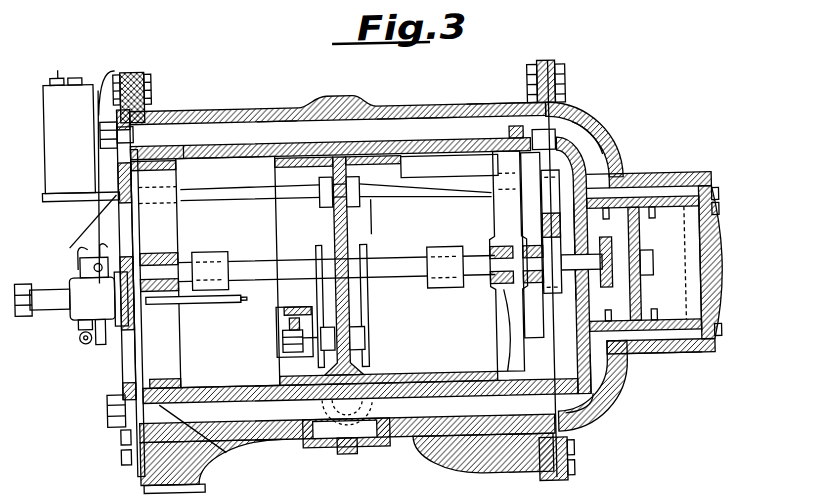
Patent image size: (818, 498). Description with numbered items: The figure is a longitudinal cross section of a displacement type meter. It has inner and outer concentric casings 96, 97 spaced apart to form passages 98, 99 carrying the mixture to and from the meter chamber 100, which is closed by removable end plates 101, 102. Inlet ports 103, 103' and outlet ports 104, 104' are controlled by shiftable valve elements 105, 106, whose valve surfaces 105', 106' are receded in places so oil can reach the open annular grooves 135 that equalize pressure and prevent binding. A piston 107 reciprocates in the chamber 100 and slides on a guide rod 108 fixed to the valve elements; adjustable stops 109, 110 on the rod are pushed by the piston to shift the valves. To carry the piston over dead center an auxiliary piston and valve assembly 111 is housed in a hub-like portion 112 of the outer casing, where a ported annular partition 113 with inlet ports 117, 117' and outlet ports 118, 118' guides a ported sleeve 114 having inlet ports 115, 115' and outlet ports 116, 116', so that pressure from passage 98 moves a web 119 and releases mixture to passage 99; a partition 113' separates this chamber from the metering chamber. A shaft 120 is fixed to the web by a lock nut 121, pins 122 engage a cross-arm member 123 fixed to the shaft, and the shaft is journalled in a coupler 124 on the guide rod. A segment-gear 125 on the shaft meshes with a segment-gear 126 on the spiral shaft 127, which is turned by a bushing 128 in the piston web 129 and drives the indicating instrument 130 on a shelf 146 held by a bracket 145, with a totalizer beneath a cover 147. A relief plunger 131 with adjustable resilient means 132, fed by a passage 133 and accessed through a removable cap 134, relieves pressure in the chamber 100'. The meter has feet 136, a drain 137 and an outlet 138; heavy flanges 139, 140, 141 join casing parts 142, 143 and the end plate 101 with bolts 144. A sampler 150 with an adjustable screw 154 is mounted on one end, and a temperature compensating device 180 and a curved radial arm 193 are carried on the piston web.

The inner casing 96 is at (279, 140).
The outer casing 97 is at (262, 97).
The passage 98 is at (394, 126).
The passage 99 is at (411, 430).
The meter chamber 100 is at (444, 344).
The chamber 100' is at (214, 376).
The end plate 101 is at (133, 347).
The end plate 102 is at (724, 228).
The inlet port 103 is at (343, 139).
The inlet port 103' is at (205, 105).
The outlet port 104 is at (212, 435).
The outlet port 104' is at (483, 462).
The valve element 105 is at (496, 261).
The valve surface 105' is at (480, 335).
The valve element 106 is at (228, 271).
The valve surface 106' is at (266, 168).
The piston 107 is at (379, 217).
The guide rod 108 is at (495, 249).
The adjustable stop 109 is at (446, 232).
The adjustable stop 110 is at (212, 249).
The auxiliary piston and valve assembly 111 is at (700, 294).
The hub-like portion 112 is at (702, 182).
The ported annular partition 113 is at (739, 185).
The partition 113' is at (653, 395).
The ported sleeve 114 is at (721, 340).
The inlet port 115 is at (644, 239).
The inlet port 115' is at (742, 200).
The outlet port 116 is at (716, 262).
The outlet port 116' is at (696, 266).
The inlet port 117 is at (644, 217).
The inlet port 117' is at (639, 164).
The outlet port 118 is at (662, 369).
The outlet port 118' is at (627, 400).
The web 119 is at (642, 249).
The shaft 120 is at (605, 278).
The lock nut 121 is at (725, 262).
The pins 122 is at (563, 250).
The cross-arm member 123 is at (624, 283).
The coupler 124 is at (600, 421).
The segment-gear 125 is at (592, 160).
The segment-gear 126 is at (606, 126).
The spiral shaft 127 is at (472, 181).
The bushing 128 is at (324, 208).
The piston web 129 is at (334, 236).
The indicating instrument 130 is at (57, 148).
The relief plunger 131 is at (139, 140).
The adjustable resilient means 132 is at (104, 105).
The passage 133 is at (85, 218).
The removable cap 134 is at (111, 117).
The annular grooves 135 is at (572, 463).
The feet 136 is at (200, 486).
The drain 137 is at (344, 456).
The outlet 138 is at (306, 447).
The flange 139 is at (565, 69).
The flange 140 is at (545, 67).
The flange 141 is at (136, 68).
The outer casing part 142 is at (624, 86).
The outer casing part 143 is at (504, 107).
The bolts 144 is at (529, 78).
The bracket 145 is at (75, 257).
The shelf 146 is at (46, 195).
The cover 147 is at (64, 72).
The sampler 150 is at (78, 305).
The adjustable screw 154 is at (238, 302).
The temperature compensating device 180 is at (288, 339).
The curved radial arm 193 is at (359, 303).